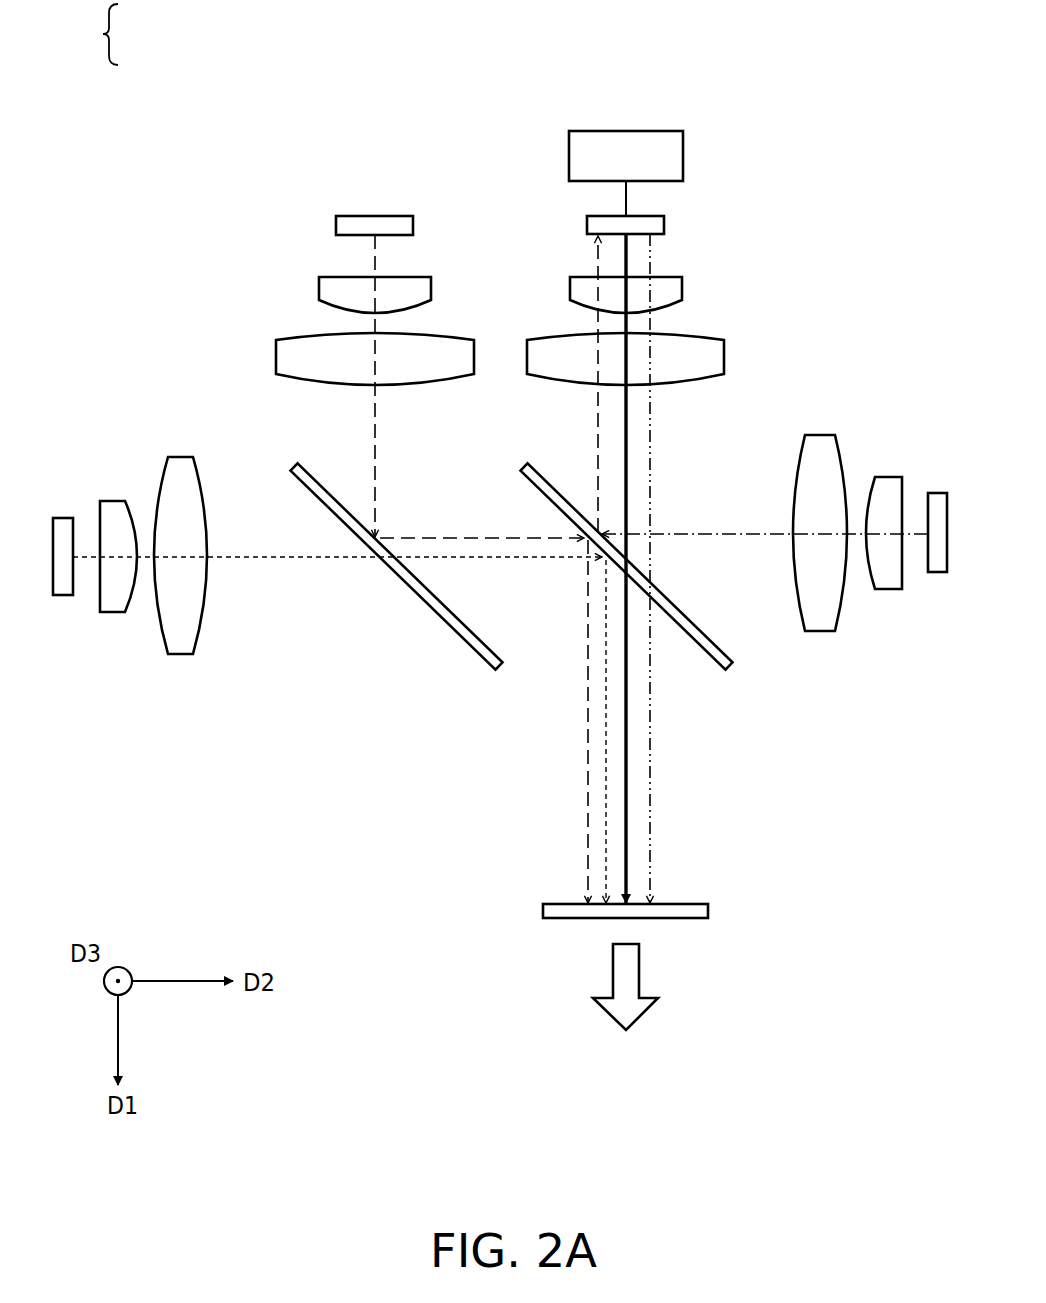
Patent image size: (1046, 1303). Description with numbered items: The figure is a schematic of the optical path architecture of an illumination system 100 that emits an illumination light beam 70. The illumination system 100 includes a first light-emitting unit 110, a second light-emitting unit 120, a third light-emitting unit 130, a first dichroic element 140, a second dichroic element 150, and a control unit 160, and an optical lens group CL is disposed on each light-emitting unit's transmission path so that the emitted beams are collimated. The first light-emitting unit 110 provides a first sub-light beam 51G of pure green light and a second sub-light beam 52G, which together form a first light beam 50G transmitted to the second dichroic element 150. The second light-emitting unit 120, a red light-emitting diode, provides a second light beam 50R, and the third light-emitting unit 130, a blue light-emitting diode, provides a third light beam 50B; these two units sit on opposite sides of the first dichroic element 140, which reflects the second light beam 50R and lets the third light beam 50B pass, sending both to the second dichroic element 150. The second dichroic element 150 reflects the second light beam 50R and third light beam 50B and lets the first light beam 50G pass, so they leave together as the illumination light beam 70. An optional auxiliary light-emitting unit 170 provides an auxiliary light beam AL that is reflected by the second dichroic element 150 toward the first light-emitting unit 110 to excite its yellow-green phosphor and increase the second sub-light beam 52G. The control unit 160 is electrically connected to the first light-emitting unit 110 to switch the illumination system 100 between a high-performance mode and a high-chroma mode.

The illumination system 100 is at (927, 1101).
The first light-emitting unit 110 is at (665, 225).
The second light-emitting unit 120 is at (336, 224).
The third light-emitting unit 130 is at (58, 596).
The first dichroic element 140 is at (313, 489).
The second dichroic element 150 is at (543, 488).
The control unit 160 is at (627, 129).
The auxiliary light-emitting unit 170 is at (935, 573).
The illumination light beam 70 is at (640, 972).
The optical lens group CL is at (322, 333).
The auxiliary light beam AL is at (739, 538).
The first light beam 50G is at (115, 35).
The first sub-light beam 51G is at (651, 827).
The second sub-light beam 52G is at (627, 423).
The second light beam 50R is at (377, 421).
The third light beam 50B is at (258, 560).